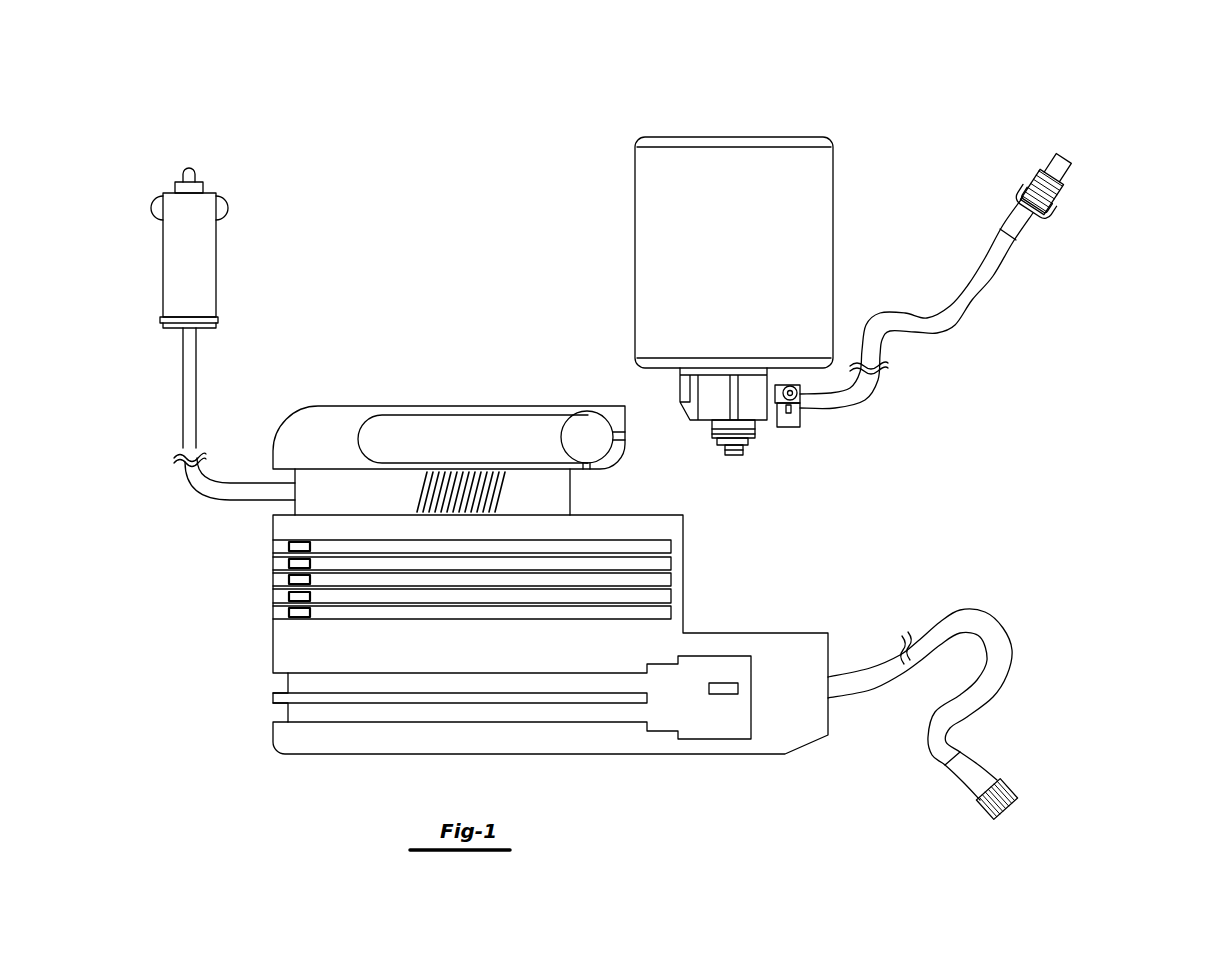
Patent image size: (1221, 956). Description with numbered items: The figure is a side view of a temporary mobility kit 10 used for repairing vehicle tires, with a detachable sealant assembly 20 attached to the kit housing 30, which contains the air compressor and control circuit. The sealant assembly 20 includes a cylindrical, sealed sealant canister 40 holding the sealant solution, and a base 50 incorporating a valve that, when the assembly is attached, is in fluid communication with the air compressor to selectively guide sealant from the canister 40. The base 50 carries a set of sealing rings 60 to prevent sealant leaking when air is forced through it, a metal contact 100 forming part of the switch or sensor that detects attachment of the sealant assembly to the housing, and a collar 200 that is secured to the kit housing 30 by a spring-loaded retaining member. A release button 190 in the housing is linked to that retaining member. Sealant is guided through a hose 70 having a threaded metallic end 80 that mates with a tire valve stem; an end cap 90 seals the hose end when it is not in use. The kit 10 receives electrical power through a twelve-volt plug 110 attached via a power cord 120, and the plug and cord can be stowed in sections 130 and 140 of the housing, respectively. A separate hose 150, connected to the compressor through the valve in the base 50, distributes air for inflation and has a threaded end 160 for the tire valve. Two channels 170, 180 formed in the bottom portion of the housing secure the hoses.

The temporary mobility kit 10 is at (1170, 75).
The sealant assembly 20 is at (1157, 115).
The kit housing 30 is at (468, 655).
The sealant canister 40 is at (815, 198).
The base 50 is at (677, 372).
The sealing rings 60 is at (727, 453).
The hose 70 is at (940, 330).
The threaded metallic end 80 is at (1053, 198).
The end cap 90 is at (1028, 186).
The metal contact 100 is at (793, 410).
The plug 110 is at (195, 260).
The power cord 120 is at (188, 413).
The section 130 is at (588, 428).
The section 140 is at (522, 490).
The hose 150 is at (887, 663).
The threaded end 160 is at (1002, 797).
The channel 170 is at (288, 675).
The channel 180 is at (288, 711).
The release button 190 is at (722, 695).
The collar 200 is at (742, 426).